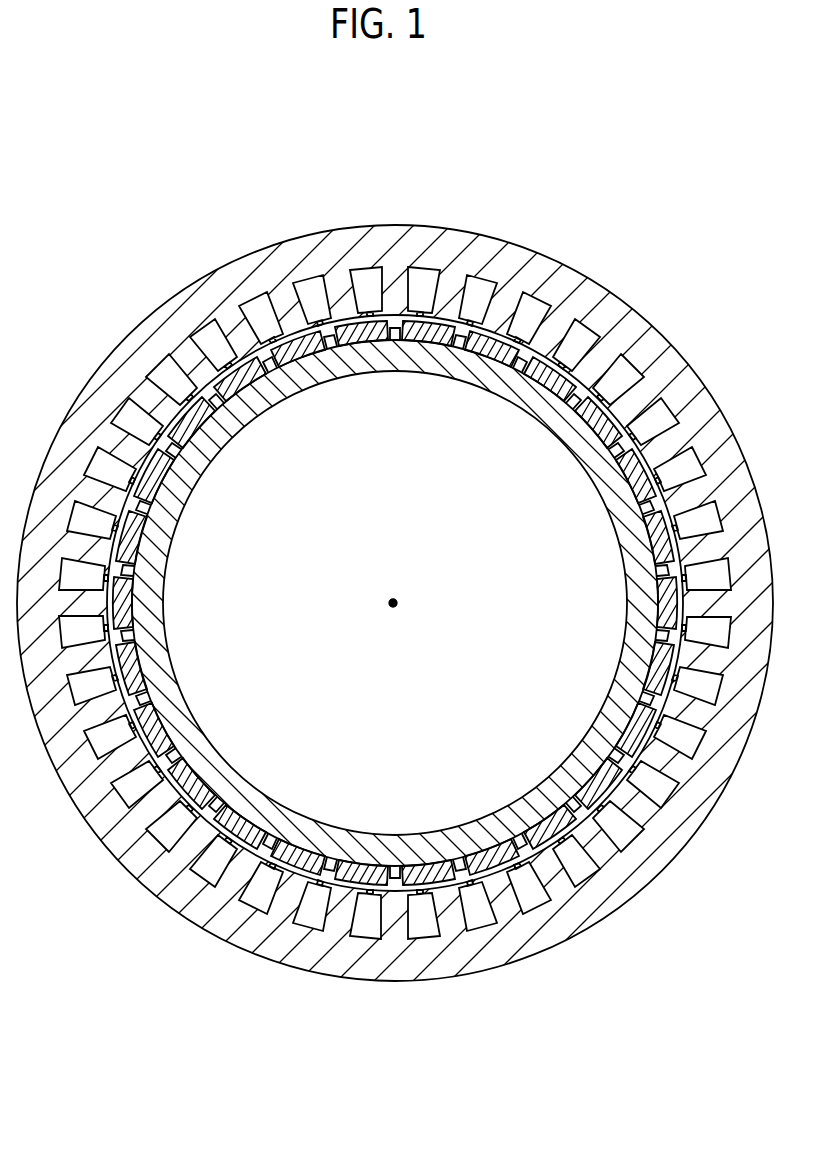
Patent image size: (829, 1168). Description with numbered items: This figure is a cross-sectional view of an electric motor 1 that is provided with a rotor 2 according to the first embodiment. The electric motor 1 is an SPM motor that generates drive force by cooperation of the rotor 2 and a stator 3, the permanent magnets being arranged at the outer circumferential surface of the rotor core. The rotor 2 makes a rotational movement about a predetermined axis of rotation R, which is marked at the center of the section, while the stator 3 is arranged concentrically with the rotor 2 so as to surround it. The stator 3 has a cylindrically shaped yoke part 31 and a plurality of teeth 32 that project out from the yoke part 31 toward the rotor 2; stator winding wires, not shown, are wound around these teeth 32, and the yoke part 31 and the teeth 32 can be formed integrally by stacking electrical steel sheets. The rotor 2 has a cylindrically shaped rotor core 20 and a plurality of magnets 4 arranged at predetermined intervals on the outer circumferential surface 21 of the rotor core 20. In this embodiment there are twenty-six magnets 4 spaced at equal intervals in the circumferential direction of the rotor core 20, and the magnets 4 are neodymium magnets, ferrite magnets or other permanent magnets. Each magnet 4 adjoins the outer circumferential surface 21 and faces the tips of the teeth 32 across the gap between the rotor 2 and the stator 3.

The electric motor 1 is at (58, 131).
The rotor 2 is at (395, 603).
The stator 3 is at (395, 563).
The magnet 4 is at (220, 450).
The rotor core 20 is at (256, 394).
The outer circumferential surface 21 is at (330, 377).
The yoke part 31 is at (555, 283).
The teeth 32 is at (503, 300).
The axis of rotation R is at (393, 602).